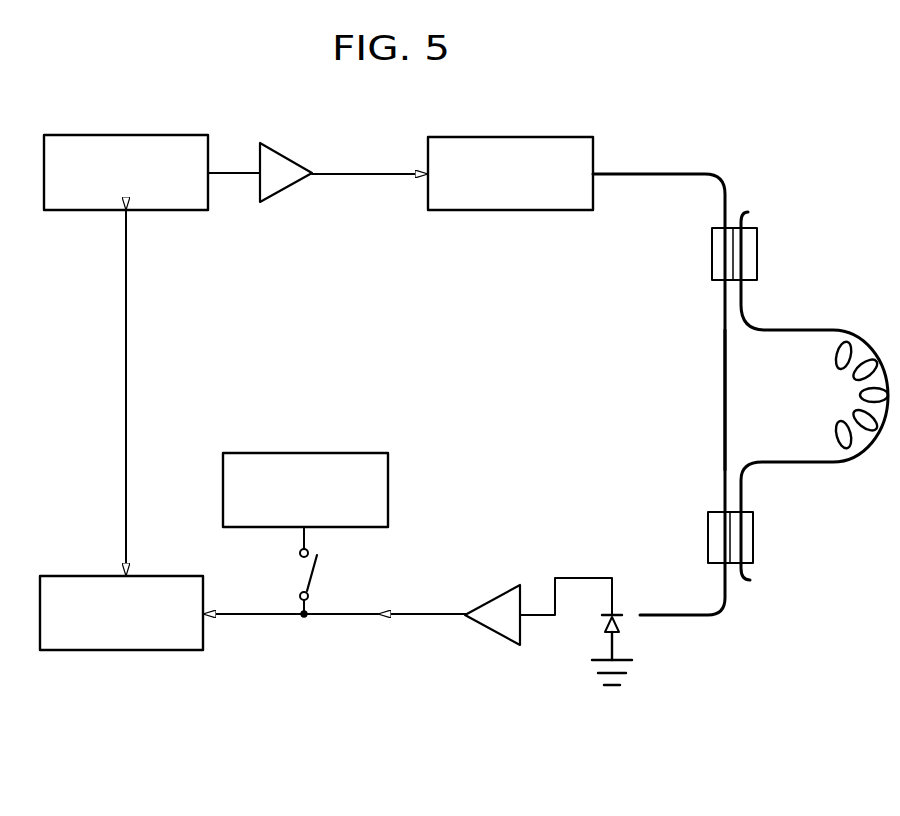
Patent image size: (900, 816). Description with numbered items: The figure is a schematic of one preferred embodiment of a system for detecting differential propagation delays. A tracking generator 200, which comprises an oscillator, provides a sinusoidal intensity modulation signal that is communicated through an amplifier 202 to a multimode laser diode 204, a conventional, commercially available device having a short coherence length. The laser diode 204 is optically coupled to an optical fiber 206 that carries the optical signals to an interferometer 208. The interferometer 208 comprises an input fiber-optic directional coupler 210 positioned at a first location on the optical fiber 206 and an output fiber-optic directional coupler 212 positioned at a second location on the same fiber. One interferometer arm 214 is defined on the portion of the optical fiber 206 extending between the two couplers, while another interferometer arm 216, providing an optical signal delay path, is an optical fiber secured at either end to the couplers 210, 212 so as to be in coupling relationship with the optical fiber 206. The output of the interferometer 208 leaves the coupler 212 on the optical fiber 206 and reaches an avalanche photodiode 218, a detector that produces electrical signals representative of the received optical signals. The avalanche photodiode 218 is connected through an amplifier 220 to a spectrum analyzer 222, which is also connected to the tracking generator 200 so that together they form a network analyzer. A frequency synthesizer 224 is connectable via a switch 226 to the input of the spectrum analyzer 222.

The tracking generator 200 is at (142, 135).
The amplifier 202 is at (272, 150).
The multimode laser diode 204 is at (517, 137).
The optical fiber 206 is at (650, 173).
The interferometer 208 is at (790, 318).
The input fiber-optic directional coupler 210 is at (757, 248).
The output fiber-optic directional coupler 212 is at (753, 545).
The interferometer arm 214 is at (725, 395).
The interferometer arm 216 is at (782, 463).
The avalanche photodiode 218 is at (622, 622).
The amplifier 220 is at (515, 587).
The spectrum analyzer 222 is at (120, 650).
The frequency synthesizer 224 is at (327, 453).
The switch 226 is at (327, 555).